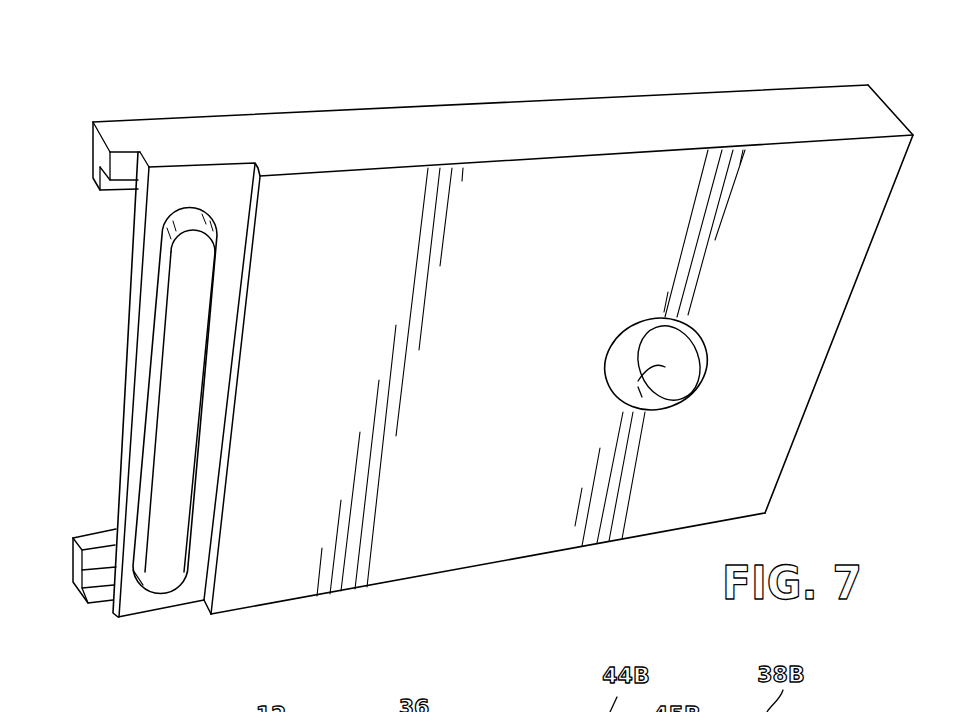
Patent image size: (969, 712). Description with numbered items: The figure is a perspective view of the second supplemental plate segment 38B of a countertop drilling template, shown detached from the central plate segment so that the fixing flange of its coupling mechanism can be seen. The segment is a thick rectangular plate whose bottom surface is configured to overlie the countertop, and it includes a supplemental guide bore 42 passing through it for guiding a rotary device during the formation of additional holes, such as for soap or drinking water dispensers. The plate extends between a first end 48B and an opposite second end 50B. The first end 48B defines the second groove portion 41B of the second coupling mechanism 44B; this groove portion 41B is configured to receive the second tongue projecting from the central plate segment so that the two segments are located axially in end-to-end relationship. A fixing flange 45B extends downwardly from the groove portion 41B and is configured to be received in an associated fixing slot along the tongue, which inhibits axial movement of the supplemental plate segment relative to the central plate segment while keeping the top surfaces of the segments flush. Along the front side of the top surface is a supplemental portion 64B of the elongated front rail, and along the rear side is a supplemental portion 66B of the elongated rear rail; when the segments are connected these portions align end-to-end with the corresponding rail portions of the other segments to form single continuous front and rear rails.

The second supplemental plate segment 38B is at (618, 89).
The second coupling mechanism 44B is at (117, 119).
The first end 48B is at (842, 327).
The second groove portion 41B is at (259, 176).
The second end 50B is at (122, 417).
The fixing flange 45B is at (192, 238).
The supplemental portion of the front rail 64B is at (96, 152).
The supplemental portion of the rear rail 66B is at (73, 581).
The supplemental guide bore 42 is at (663, 367).